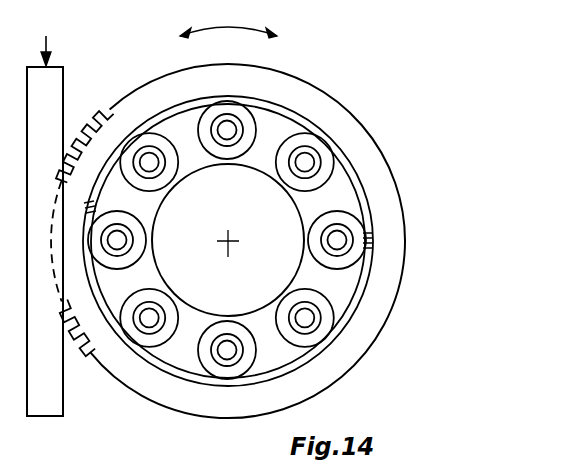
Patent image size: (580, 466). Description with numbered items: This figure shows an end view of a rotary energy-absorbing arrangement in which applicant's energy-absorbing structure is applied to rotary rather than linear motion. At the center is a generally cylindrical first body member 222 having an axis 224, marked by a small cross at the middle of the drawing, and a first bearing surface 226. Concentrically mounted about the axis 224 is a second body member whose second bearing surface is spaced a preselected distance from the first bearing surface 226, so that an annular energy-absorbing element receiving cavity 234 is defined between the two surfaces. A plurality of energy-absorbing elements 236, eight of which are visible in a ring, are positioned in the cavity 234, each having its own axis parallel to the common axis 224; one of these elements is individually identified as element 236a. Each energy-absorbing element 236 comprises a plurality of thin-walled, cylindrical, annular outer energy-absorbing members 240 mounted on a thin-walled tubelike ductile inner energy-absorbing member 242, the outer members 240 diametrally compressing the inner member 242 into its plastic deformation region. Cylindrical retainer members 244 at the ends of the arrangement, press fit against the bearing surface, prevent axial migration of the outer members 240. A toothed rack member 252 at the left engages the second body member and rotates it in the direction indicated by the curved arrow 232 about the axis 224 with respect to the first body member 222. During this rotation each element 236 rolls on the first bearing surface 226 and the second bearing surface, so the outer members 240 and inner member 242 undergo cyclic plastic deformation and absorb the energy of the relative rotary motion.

The first body member 222 is at (250, 211).
The axis 224 is at (229, 244).
The first bearing surface 226 is at (295, 123).
The arrow 232 is at (218, 31).
The energy-absorbing element receiving cavity 234 is at (141, 277).
The energy-absorbing elements 236 is at (172, 130).
The roller 236a is at (335, 208).
The outer energy-absorbing members 240 is at (346, 209).
The inner energy-absorbing member 242 is at (300, 302).
The cylindrical retainer members 244 is at (320, 348).
The rack member 252 is at (63, 84).